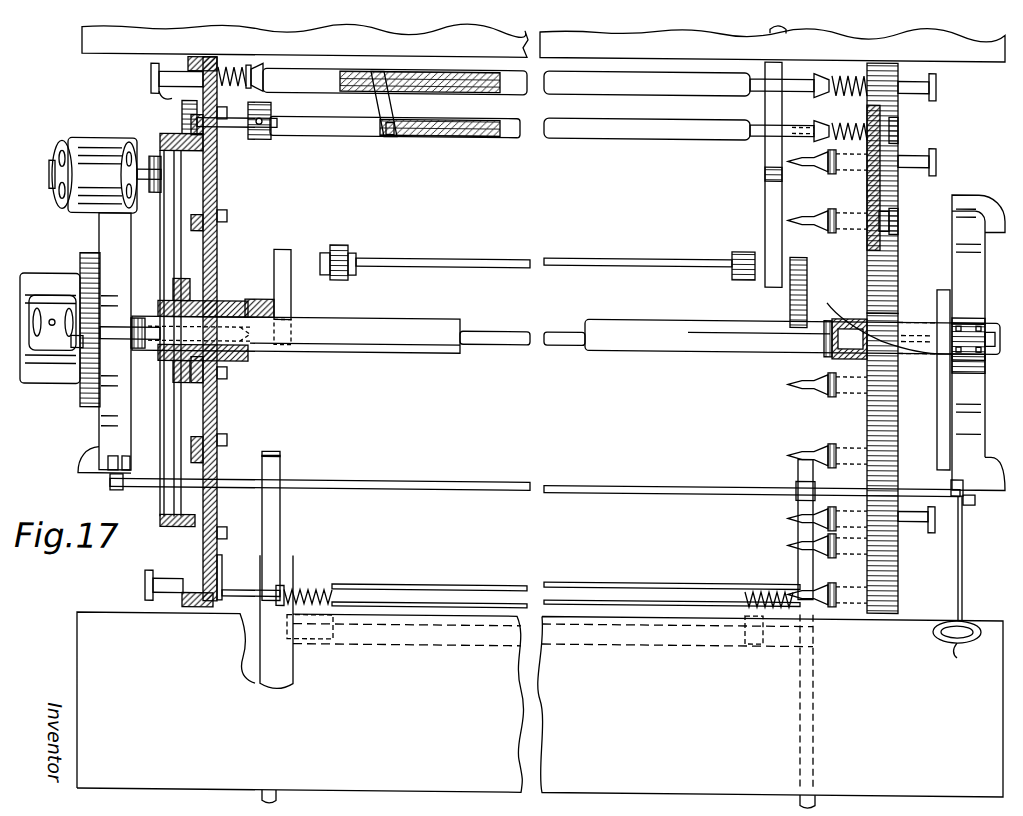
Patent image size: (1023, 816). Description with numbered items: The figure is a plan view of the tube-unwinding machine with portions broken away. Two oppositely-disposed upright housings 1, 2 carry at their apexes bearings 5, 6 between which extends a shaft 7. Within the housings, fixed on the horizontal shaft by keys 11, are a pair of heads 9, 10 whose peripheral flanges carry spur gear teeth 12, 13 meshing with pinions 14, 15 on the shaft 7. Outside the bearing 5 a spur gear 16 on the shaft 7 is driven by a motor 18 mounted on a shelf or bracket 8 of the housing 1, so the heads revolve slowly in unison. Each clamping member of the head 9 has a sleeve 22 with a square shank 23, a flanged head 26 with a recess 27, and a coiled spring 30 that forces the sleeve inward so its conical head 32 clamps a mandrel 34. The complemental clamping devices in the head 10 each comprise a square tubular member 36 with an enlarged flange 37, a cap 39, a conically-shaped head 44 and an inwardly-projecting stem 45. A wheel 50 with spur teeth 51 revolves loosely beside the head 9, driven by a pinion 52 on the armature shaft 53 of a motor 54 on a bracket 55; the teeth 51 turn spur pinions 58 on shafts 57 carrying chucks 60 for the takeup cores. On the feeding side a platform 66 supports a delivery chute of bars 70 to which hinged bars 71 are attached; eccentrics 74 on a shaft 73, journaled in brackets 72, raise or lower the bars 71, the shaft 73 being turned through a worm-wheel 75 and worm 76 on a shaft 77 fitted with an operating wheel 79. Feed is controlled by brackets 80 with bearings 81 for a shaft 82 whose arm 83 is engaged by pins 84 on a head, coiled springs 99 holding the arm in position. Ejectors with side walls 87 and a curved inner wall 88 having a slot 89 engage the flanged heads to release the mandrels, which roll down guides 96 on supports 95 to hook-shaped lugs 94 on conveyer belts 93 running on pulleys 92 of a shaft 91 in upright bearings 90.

The upright housing 1 is at (104, 343).
The upright housing 2 is at (978, 343).
The bearing 5 is at (112, 330).
The bearing 6 is at (985, 330).
The shaft 7 is at (690, 348).
The shelf or bracket 8 is at (50, 328).
The head 9 is at (218, 238).
The head 10 is at (867, 190).
The key 11 is at (262, 302).
The spur gear teeth 12 is at (204, 60).
The spur gear teeth 13 is at (890, 400).
The pinion 14 is at (76, 353).
The pinion 15 is at (985, 362).
The spur gear 16 is at (85, 262).
The motor 18 is at (48, 310).
The sleeve 22 is at (116, 455).
The shank 23 is at (233, 68).
The cylindrical flange or head 26 is at (151, 72).
The recess 27 is at (150, 97).
The coiled spring 30 is at (250, 66).
The conically formed head 32 is at (264, 74).
The mandrel 34 is at (395, 89).
The square tubular member 36 is at (898, 210).
The enlarged flange 37 is at (899, 218).
The cap 39 is at (832, 448).
The conically-shaped head 44 is at (822, 226).
The stem 45 is at (797, 216).
The wheel 50 is at (174, 236).
The spur teeth 51 is at (170, 531).
The pinion 52 is at (165, 190).
The armature shaft 53 is at (152, 160).
The motor 54 is at (95, 150).
The bracket 55 is at (62, 146).
The shaft 57 is at (234, 121).
The spur pinion 58 is at (178, 116).
The chuck 60 is at (259, 142).
The platform 66 is at (540, 711).
The bar 70 is at (260, 665).
The hinged bar 71 is at (280, 520).
The bracket 72 is at (976, 496).
The shaft 73 is at (703, 487).
The eccentric 74 is at (282, 477).
The worm-wheel 75 is at (961, 494).
The worm 76 is at (950, 520).
The shaft 77 is at (963, 553).
The operating wheel 79 is at (959, 632).
The bracket 80 is at (350, 600).
The bearing 81 is at (334, 590).
The shaft 82 is at (258, 599).
The arm 83 is at (213, 581).
The pin 84 is at (220, 560).
The side wall 87 is at (895, 305).
The curved inner wall 88 is at (900, 280).
The slot 89 is at (888, 327).
The upright bearing 90 is at (357, 260).
The rotatable shaft 91 is at (433, 260).
The pulley 92 is at (340, 247).
The conveyer belt 93 is at (385, 100).
The hook-shaped lug 94 is at (387, 136).
The support 95 is at (331, 331).
The guide 96 is at (292, 299).
The coiled spring 99 is at (318, 592).